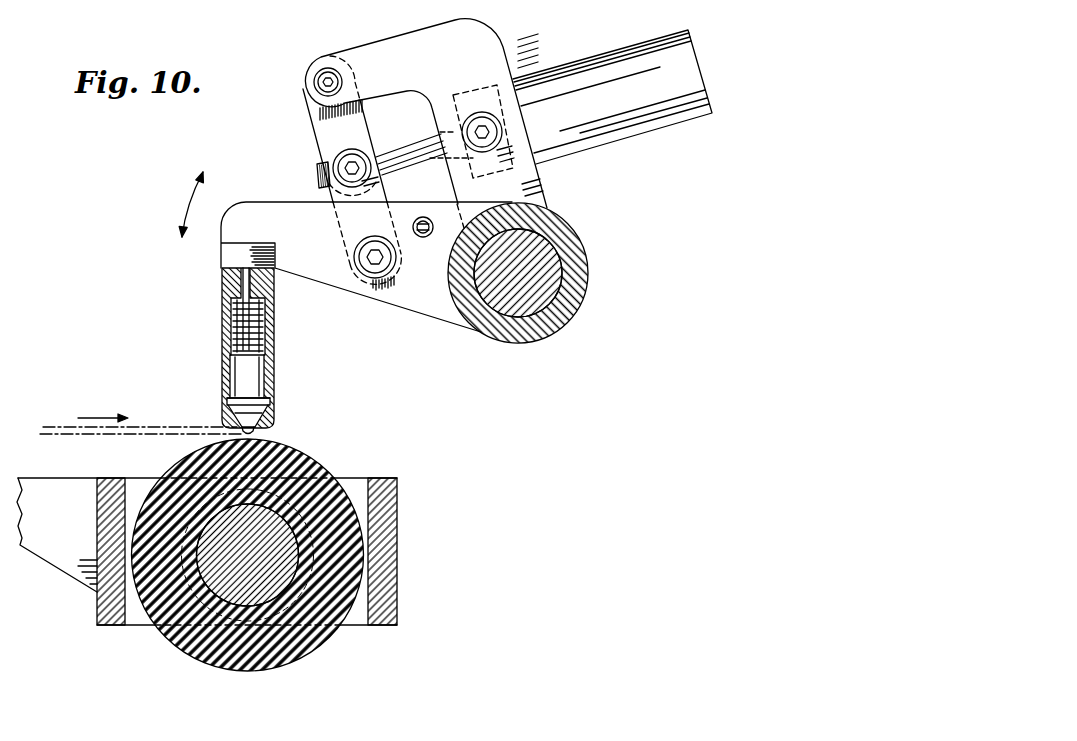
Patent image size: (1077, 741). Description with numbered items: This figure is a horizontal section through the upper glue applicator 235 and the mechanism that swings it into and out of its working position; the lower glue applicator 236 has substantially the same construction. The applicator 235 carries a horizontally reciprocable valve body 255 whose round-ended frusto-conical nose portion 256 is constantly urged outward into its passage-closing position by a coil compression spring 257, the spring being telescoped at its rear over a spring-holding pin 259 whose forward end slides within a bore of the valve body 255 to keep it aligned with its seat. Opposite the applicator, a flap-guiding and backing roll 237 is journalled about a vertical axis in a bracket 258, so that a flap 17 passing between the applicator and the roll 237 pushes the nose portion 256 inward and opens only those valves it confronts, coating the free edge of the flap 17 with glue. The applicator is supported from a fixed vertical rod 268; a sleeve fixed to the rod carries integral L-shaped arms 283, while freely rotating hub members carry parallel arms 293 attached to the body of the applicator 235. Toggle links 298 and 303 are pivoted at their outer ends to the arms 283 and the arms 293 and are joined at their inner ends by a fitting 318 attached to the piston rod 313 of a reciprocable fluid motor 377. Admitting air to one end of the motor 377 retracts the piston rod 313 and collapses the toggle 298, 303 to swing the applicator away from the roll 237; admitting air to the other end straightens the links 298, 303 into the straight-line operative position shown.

The L-shaped arms 283 is at (508, 66).
The reciprocable fluid motor 377 is at (698, 76).
The upper toggle link 298 is at (318, 126).
The piston rod 313 is at (397, 148).
The fitting 318 is at (317, 168).
The lower toggle link 303 is at (341, 229).
The arms 293 is at (432, 316).
The vertical rod 268 is at (552, 291).
The upper glue applicator 235 is at (215, 280).
The spring-holding pin 259 is at (249, 289).
The coil compression spring 257 is at (261, 336).
The valve body 255 is at (253, 378).
The lower glue applicator 236 is at (275, 411).
The nose portion 256 is at (254, 433).
The bracket 258 is at (97, 605).
The flap-guiding and backing roll 237 is at (326, 644).
The flap 17 is at (188, 426).